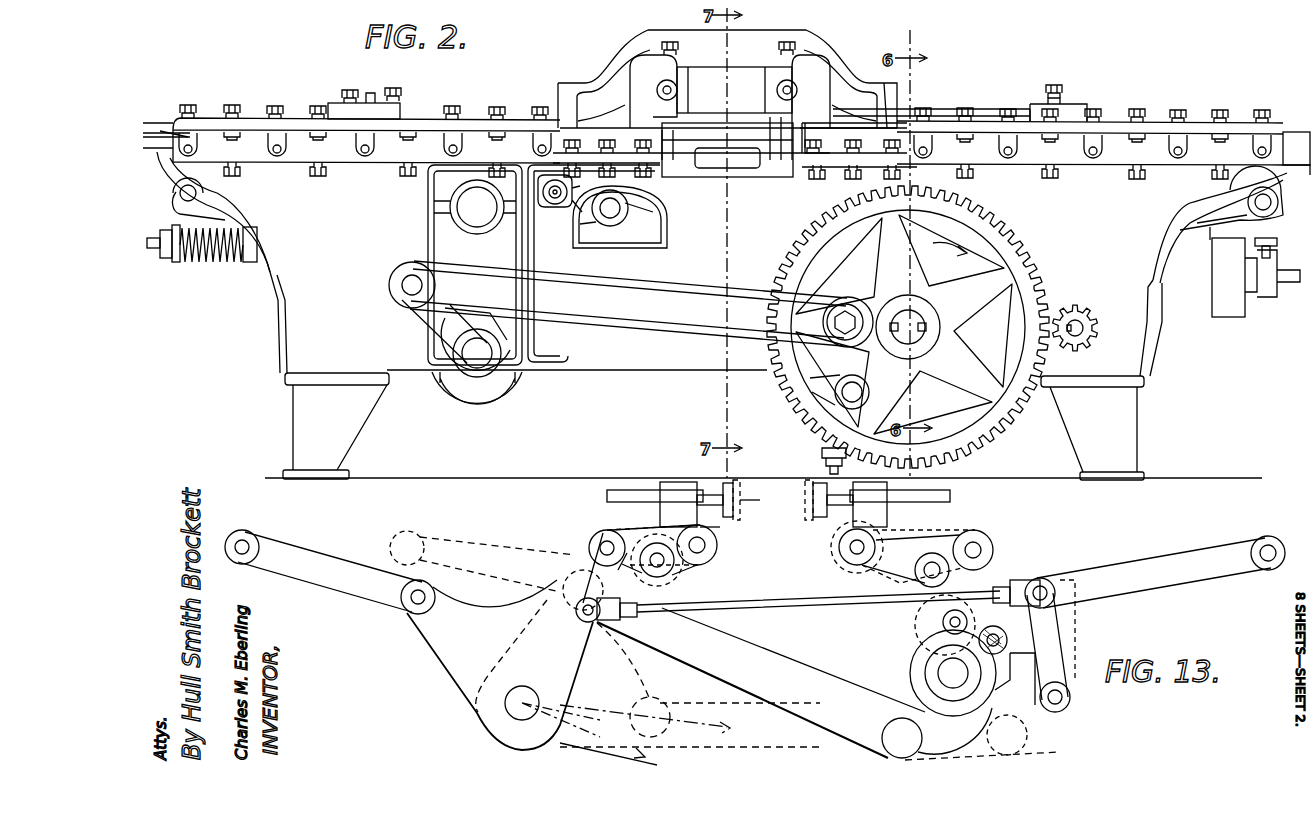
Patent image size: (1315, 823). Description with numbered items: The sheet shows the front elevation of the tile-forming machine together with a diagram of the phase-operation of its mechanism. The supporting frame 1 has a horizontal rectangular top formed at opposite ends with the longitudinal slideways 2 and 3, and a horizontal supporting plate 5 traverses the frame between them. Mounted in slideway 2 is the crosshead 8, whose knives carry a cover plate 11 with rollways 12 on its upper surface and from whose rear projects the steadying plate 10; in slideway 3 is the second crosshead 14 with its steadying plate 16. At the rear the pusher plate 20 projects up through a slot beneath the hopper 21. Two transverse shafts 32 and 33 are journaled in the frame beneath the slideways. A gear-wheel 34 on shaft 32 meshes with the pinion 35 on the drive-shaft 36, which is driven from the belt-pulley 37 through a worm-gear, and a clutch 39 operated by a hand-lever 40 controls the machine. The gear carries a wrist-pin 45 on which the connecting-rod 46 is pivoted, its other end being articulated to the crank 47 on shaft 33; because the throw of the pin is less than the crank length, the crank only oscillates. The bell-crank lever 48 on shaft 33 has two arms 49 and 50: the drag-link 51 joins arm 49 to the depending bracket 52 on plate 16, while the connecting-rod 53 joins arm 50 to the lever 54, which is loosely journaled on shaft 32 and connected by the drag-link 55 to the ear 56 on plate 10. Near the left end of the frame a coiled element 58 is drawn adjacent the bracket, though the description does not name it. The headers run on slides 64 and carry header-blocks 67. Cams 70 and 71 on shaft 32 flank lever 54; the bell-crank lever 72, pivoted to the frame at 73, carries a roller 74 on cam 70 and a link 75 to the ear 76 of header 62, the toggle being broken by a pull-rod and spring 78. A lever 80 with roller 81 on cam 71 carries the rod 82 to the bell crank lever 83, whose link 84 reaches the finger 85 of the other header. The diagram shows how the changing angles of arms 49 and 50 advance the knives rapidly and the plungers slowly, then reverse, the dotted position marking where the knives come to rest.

In FIG. 2, the supporting frame 1 is at (702, 301).
In FIG. 2, the longitudinal slideway 2 is at (1268, 134).
In FIG. 2, the longitudinal slideway 3 is at (175, 118).
In FIG. 2, the horizontal supporting plate 5 is at (770, 162).
In FIG. 2, the crosshead 8 is at (1073, 106).
In FIG. 2, the steadying plate 10 is at (1308, 166).
In FIG. 2, the cover plate 11 is at (985, 116).
In FIG. 2, the rollway 12 is at (950, 109).
In FIG. 2, the second crosshead 14 is at (342, 103).
In FIG. 2, the steadying plate 16 is at (192, 142).
In FIG. 2, the pusher plate 20 is at (727, 150).
In FIG. 2, the hopper 21 is at (732, 79).
In FIG. 2, the transverse horizontal shaft 32 is at (920, 335).
In FIG. 13, the transverse horizontal shaft 32 is at (950, 673).
In FIG. 2, the transverse horizontal shaft 33 is at (490, 350).
In FIG. 13, the transverse horizontal shaft 33 is at (524, 690).
In FIG. 2, the gear-wheel 34 is at (1043, 270).
In FIG. 2, the pinion 35 is at (1095, 322).
In FIG. 2, the drive-shaft 36 is at (1078, 338).
In FIG. 2, the belt-pulley 37 is at (1208, 277).
In FIG. 2, the clutch 39 is at (1230, 318).
In FIG. 2, the hand-lever 40 is at (1270, 240).
In FIG. 2, the wrist-pin 45 is at (846, 303).
In FIG. 2, the connecting-rod 46 is at (675, 290).
In FIG. 2, the crank 47 is at (415, 315).
In FIG. 2, the bell-crank lever 48 is at (472, 398).
In FIG. 13, the bell-crank lever 48 is at (448, 676).
In FIG. 13, the arm 49 is at (408, 612).
In FIG. 13, the arm 50 is at (570, 580).
In FIG. 2, the drag-link 51 is at (226, 202).
In FIG. 13, the drag-link 51 is at (344, 562).
In FIG. 2, the depending bracket 52 is at (175, 190).
In FIG. 2, the connecting-rod 53 is at (820, 382).
In FIG. 13, the connecting-rod 53 is at (790, 678).
In FIG. 13, the lever 54 is at (932, 673).
In FIG. 2, the drag-link 55 is at (1210, 232).
In FIG. 13, the drag-link 55 is at (1161, 572).
In FIG. 2, the ear 56 is at (1285, 198).
In FIG. 2, the spring 58 is at (232, 262).
In FIG. 13, the transverse header 62 is at (903, 509).
In FIG. 13, the longitudinal slide 64 is at (607, 496).
In FIG. 2, the header-block 67 is at (679, 152).
In FIG. 13, the header-block 67 is at (808, 494).
In FIG. 13, the cam 70 is at (1037, 662).
In FIG. 13, the cam 71 is at (1046, 706).
In FIG. 13, the bell-crank lever 72 is at (1026, 588).
In FIG. 13, the pivot 73 is at (990, 545).
In FIG. 13, the roller 74 is at (943, 626).
In FIG. 13, the link 75 is at (918, 558).
In FIG. 13, the ear 76 is at (840, 535).
In FIG. 2, the spring 78 is at (822, 452).
In FIG. 13, the lever 80 is at (1062, 633).
In FIG. 13, the roller 81 is at (1008, 640).
In FIG. 13, the rod 82 is at (785, 600).
In FIG. 2, the bell crank lever 83 is at (582, 224).
In FIG. 13, the bell crank lever 83 is at (606, 532).
In FIG. 13, the link 84 is at (675, 570).
In FIG. 2, the finger 85 is at (640, 212).
In FIG. 13, the finger 85 is at (722, 525).